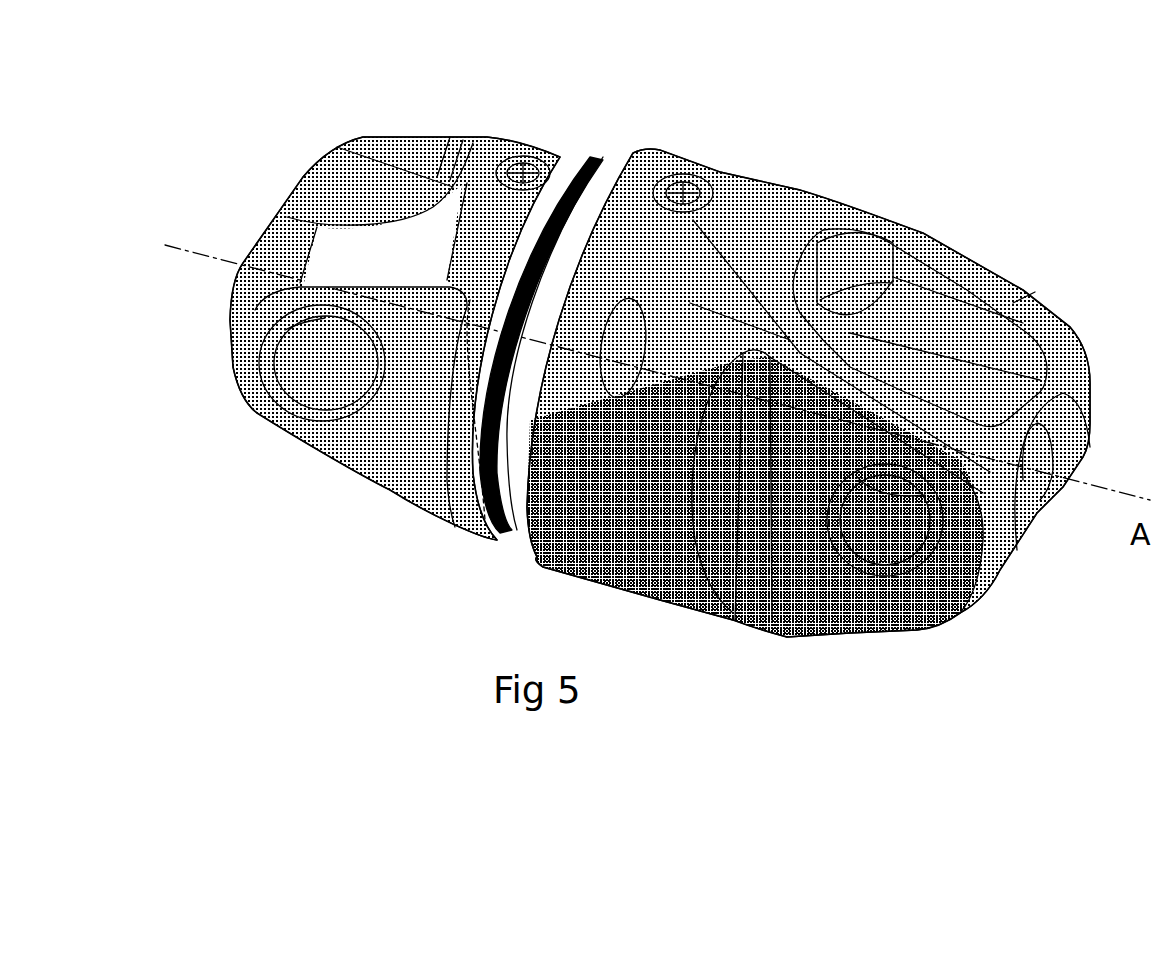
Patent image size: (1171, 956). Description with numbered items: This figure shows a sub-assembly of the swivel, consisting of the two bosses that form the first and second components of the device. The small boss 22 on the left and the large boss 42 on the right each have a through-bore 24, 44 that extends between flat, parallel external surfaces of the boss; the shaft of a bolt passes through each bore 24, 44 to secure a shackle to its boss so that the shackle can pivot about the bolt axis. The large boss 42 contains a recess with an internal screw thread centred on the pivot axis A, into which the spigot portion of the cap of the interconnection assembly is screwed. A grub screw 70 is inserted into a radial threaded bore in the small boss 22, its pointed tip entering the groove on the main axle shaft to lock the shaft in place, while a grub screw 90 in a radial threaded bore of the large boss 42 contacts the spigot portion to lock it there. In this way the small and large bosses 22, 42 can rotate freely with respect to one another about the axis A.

The small boss 22 is at (405, 288).
The through-bore 24 is at (310, 390).
The large boss 42 is at (808, 399).
The through-bore 44 is at (862, 527).
The grub screw 70 is at (527, 157).
The grub screw 90 is at (700, 178).